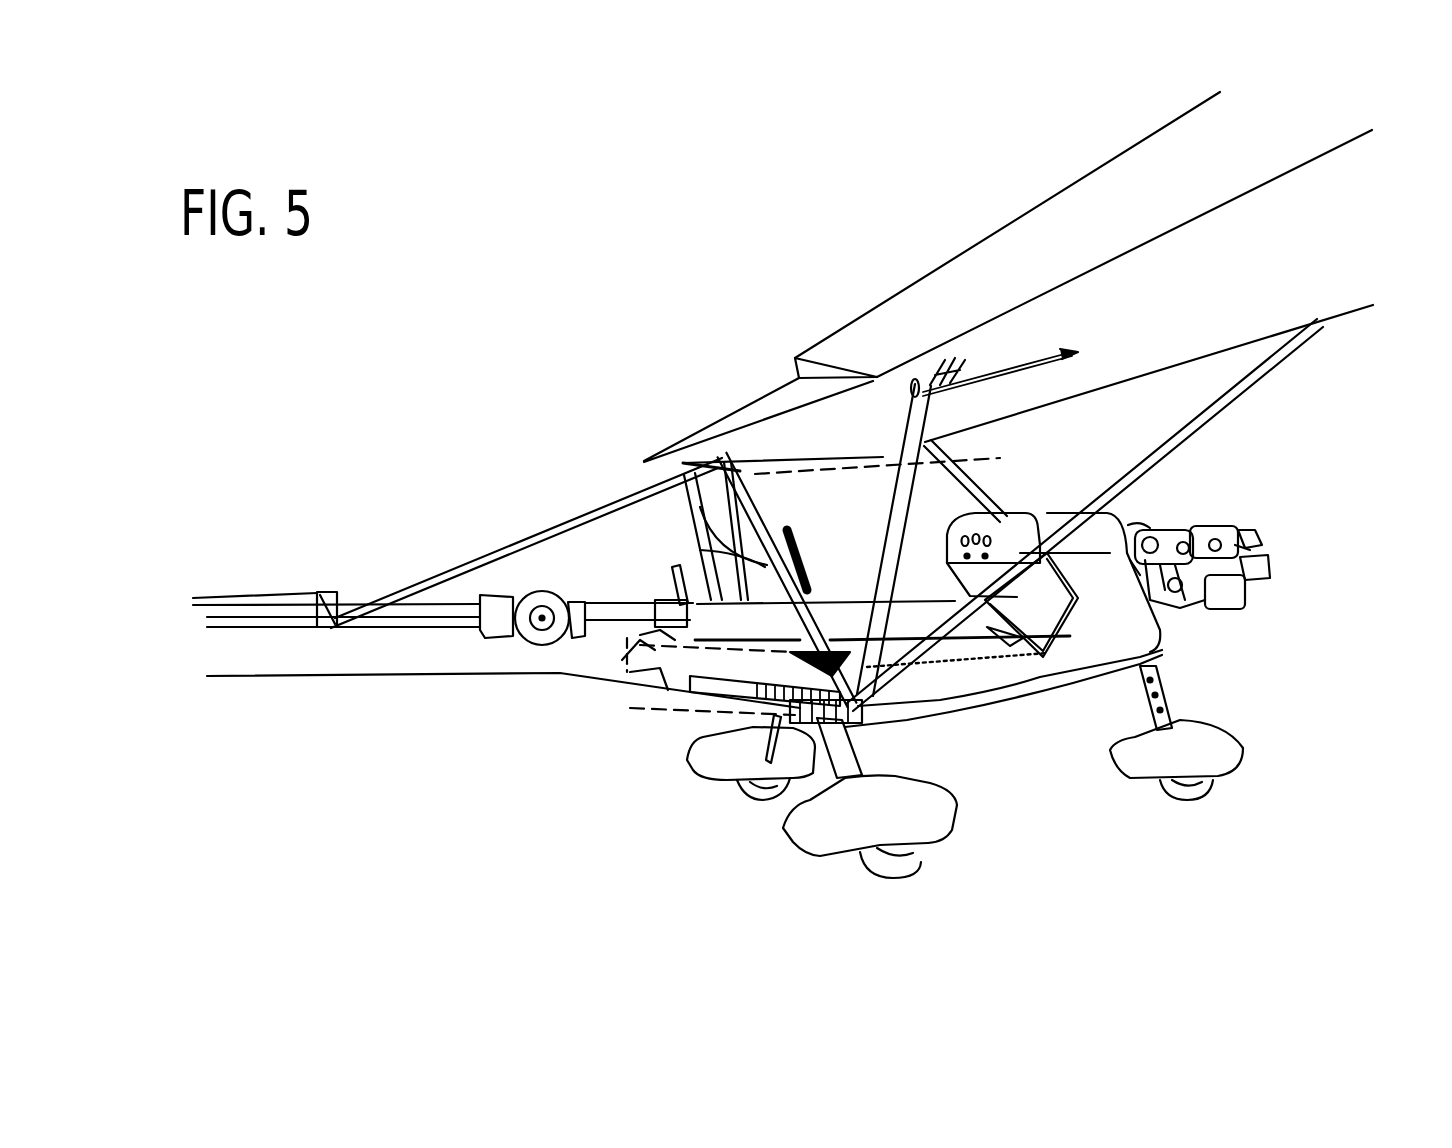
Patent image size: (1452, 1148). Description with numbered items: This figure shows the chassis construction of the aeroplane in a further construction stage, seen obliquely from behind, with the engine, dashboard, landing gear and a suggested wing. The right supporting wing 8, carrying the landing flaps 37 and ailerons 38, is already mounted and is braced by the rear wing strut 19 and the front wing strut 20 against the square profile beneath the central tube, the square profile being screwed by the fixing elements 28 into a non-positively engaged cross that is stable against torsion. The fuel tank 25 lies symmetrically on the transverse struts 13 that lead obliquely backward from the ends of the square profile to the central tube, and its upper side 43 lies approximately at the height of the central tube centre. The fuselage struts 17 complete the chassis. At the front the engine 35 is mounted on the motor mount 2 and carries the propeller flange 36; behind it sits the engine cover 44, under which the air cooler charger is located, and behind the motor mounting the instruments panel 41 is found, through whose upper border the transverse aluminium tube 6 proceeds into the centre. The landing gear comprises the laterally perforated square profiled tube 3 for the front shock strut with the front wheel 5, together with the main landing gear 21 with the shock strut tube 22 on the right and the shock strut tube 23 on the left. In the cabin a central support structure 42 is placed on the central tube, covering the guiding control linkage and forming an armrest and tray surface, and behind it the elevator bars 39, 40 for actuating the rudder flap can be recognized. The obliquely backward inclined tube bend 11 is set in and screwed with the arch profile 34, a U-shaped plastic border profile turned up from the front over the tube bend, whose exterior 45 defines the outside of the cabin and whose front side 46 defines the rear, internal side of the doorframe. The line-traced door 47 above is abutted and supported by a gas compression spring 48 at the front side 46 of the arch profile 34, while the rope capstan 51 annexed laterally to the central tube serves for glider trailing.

The motor mount 2 is at (1127, 553).
The laterally perforated square profiled tube for front shock strut 3 is at (1160, 682).
The front wheel 5 is at (1207, 780).
The central aluminium tube through instruments panel 6 is at (963, 460).
The supporting wing 8 is at (1313, 223).
The obliquely backward inclined tube bend 11 is at (790, 615).
The rear cross-member of the square profiled element 13 is at (708, 707).
The fuselage struts 17 is at (523, 542).
The rear wing strut 19 is at (897, 533).
The front wing strut 20 is at (1217, 417).
The main landing gear 21 is at (787, 850).
The shock strut tube on the right 22 is at (857, 747).
The shock strut tube on the left side 23 is at (727, 783).
The fuel tank 25 is at (632, 670).
The fixing elements for square profile 28 is at (842, 790).
The arch profile for border tube bends 34 is at (702, 528).
The engine 35 is at (1263, 578).
The propeller flange 36 is at (1255, 537).
The landing flaps 37 is at (740, 427).
The ailerons 38 is at (948, 298).
The elevator bar 39 is at (413, 625).
The elevator bar 40 is at (227, 597).
The instruments panel 41 is at (1055, 517).
The central support structure 42 is at (987, 627).
The upper side of tank 43 is at (650, 693).
The engine cover 44 is at (1097, 480).
The exterior of arch profile 45 is at (700, 550).
The front side of the arch profile 46 is at (793, 530).
The door 47 is at (883, 463).
The gas compression spring 48 is at (808, 580).
The handle holes in bier 51 is at (528, 635).